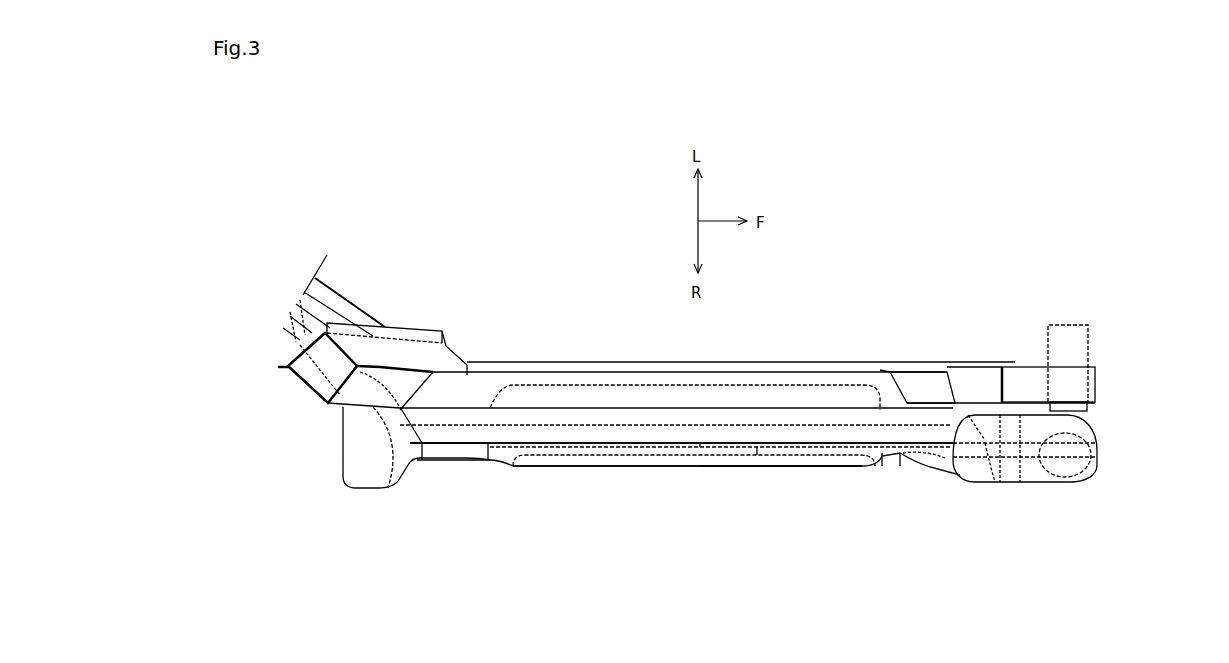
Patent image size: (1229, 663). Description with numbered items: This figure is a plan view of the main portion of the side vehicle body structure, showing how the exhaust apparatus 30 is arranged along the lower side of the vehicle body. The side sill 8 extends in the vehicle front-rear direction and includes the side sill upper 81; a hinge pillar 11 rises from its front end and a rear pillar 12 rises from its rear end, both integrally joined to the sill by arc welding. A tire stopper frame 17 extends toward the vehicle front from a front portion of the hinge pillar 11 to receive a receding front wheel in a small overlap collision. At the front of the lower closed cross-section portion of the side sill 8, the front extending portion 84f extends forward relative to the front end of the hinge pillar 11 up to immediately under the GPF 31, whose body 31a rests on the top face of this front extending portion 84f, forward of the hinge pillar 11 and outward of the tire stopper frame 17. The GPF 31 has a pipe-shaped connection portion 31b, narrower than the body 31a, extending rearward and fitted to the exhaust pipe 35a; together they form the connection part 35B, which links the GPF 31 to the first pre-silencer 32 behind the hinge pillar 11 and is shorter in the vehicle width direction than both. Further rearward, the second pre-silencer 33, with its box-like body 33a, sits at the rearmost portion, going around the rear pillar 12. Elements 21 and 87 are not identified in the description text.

The side sill 8 is at (623, 362).
The strut 21 is at (356, 305).
The rear pillar 12 is at (406, 325).
The exhaust pipe 35a is at (297, 340).
The connection part 35B is at (923, 525).
The second pre-silencer 33 is at (343, 458).
The body of the second pre-silencer 33a is at (388, 482).
The first pre-silencer 32 is at (577, 458).
The inner member 87 is at (702, 436).
The side sill upper 81 is at (757, 445).
The exhaust apparatus 30 is at (831, 478).
The hinge pillar 11 is at (982, 362).
The tire stopper frame 17 is at (1033, 372).
The GPF 31 is at (1070, 476).
The body of the GPF 31a is at (1018, 470).
The connection portion of the GPF 31b is at (930, 470).
The front extending portion 84f is at (993, 488).